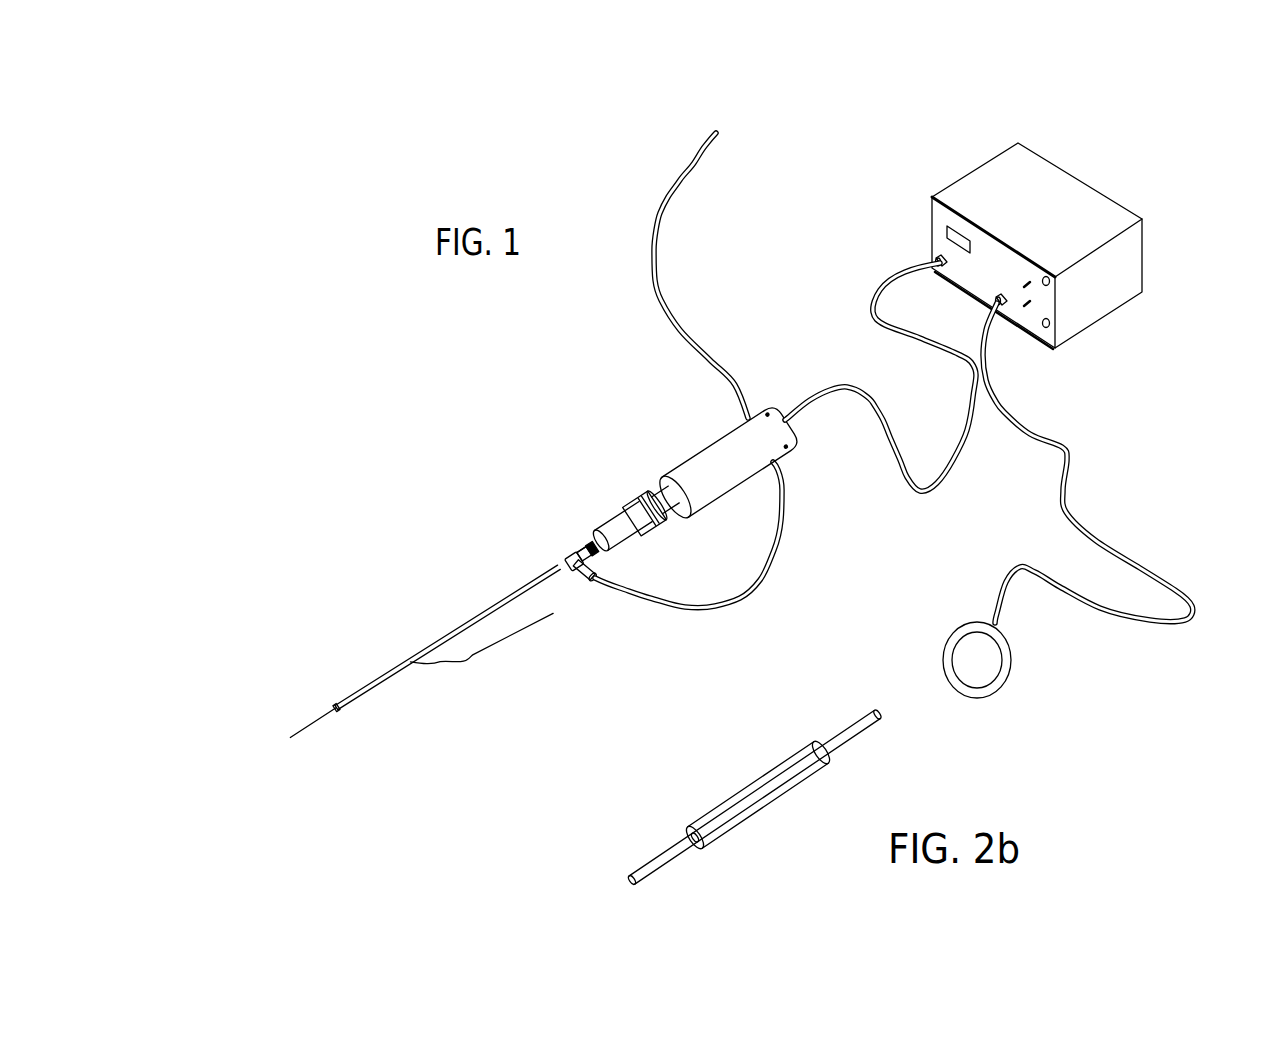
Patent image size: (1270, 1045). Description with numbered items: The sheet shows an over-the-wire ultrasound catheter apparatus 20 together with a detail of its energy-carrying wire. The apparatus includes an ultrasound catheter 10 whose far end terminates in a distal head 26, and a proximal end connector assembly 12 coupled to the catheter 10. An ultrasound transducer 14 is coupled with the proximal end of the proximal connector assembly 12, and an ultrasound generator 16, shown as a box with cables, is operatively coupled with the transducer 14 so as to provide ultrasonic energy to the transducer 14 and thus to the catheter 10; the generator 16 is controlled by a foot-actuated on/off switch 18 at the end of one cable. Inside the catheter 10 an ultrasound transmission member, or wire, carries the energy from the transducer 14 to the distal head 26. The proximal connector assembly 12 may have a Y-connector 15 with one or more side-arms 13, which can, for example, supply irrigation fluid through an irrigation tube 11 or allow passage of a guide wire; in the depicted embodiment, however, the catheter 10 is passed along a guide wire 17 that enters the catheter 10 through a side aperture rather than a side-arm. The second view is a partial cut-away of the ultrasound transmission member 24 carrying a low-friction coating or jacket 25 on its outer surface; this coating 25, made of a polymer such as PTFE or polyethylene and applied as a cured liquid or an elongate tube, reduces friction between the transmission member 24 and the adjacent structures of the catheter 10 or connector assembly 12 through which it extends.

In FIG. 1, the ultrasound catheter 10 is at (473, 621).
In FIG. 1, the irrigation tube 11 is at (713, 130).
In FIG. 1, the proximal end connector assembly 12 is at (668, 480).
In FIG. 1, the side-arm 13 is at (575, 584).
In FIG. 1, the ultrasound transducer 14 is at (700, 445).
In FIG. 1, the Y-connector 15 is at (575, 551).
In FIG. 1, the ultrasound generator 16 is at (1046, 157).
In FIG. 1, the guide wire 17 is at (476, 657).
In FIG. 1, the foot-actuated on/off switch 18 is at (1012, 673).
In FIG. 1, the over-the-wire ultrasound catheter apparatus 20 is at (1210, 388).
In FIG. 2b, the ultrasound transmission member 24 is at (677, 856).
In FIG. 2b, the low-friction coating or jacket 25 is at (778, 790).
In FIG. 1, the distal head 26 is at (338, 712).